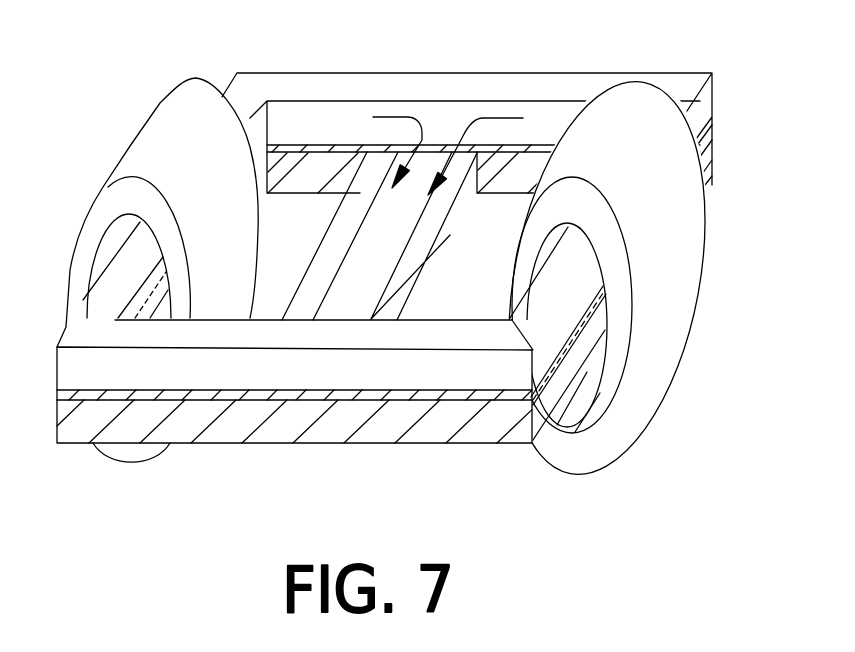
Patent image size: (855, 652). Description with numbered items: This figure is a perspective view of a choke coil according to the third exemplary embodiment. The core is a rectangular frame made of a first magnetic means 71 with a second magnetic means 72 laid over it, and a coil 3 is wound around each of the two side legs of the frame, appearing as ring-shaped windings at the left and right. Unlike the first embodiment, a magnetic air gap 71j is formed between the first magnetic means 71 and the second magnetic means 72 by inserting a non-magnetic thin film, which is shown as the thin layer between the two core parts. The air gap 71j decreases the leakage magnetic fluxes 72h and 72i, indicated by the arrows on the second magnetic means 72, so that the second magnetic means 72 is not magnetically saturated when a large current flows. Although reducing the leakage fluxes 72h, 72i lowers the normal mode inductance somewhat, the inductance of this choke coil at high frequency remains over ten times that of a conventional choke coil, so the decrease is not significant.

The coil 3 is at (158, 137).
The first magnetic means 71 is at (366, 440).
The magnetic air gap 71j is at (334, 144).
The second magnetic means 72 is at (456, 84).
The leakage magnetic flux 72i is at (385, 117).
The leakage magnetic flux 72h is at (488, 118).